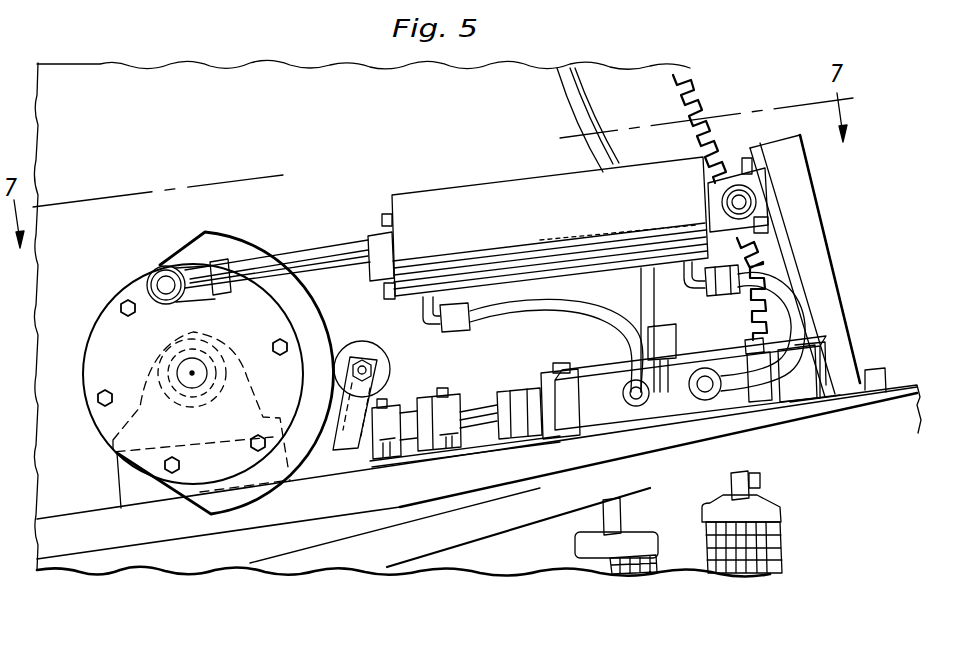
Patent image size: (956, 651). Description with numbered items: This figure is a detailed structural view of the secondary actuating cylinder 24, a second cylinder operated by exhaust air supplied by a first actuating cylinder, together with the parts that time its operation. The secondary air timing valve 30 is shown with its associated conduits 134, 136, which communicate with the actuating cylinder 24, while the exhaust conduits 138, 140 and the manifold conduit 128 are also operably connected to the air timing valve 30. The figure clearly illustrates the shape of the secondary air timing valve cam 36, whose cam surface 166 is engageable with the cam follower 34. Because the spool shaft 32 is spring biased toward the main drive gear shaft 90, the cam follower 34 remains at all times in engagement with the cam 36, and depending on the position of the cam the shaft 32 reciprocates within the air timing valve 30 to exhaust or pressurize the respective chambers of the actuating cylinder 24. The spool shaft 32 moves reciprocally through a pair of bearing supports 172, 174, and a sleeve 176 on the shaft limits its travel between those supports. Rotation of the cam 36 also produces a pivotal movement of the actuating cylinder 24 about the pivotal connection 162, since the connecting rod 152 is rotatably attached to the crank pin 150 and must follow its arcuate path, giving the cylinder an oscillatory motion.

The secondary actuating cylinder 24 is at (452, 200).
The secondary air timing valve 30 is at (667, 402).
The spool shaft 32 is at (410, 424).
The cam follower 34 is at (363, 341).
The secondary air timing valve cam 36 is at (103, 331).
The main drive gear shaft 90 is at (188, 383).
The manifold conduit 128 is at (572, 101).
The conduit 134 is at (578, 311).
The conduit 136 is at (752, 292).
The exhaust conduit 138 is at (585, 534).
The exhaust conduit 140 is at (758, 480).
The crank pin 150 is at (162, 279).
The connecting rod 152 is at (341, 256).
The pivotal connection 162 is at (762, 202).
The cam surface 166 is at (248, 242).
The bearing support 172 is at (386, 420).
The bearing support 174 is at (467, 430).
The sleeve 176 is at (427, 408).